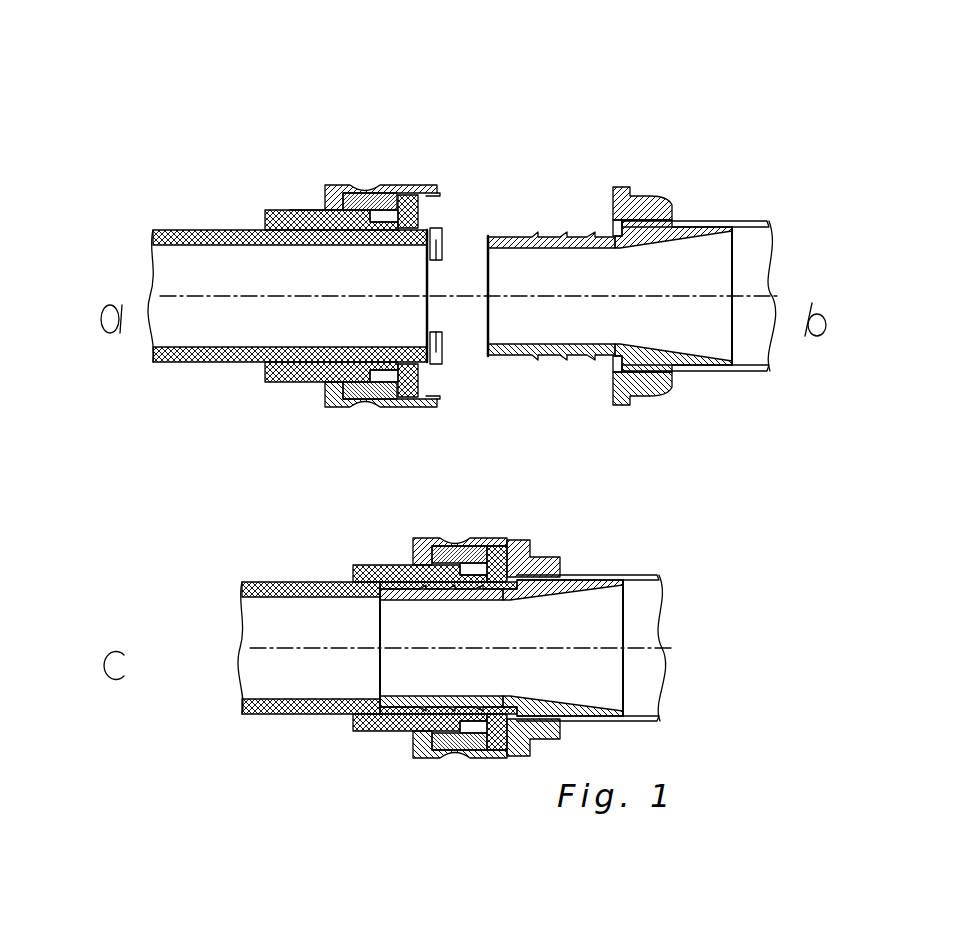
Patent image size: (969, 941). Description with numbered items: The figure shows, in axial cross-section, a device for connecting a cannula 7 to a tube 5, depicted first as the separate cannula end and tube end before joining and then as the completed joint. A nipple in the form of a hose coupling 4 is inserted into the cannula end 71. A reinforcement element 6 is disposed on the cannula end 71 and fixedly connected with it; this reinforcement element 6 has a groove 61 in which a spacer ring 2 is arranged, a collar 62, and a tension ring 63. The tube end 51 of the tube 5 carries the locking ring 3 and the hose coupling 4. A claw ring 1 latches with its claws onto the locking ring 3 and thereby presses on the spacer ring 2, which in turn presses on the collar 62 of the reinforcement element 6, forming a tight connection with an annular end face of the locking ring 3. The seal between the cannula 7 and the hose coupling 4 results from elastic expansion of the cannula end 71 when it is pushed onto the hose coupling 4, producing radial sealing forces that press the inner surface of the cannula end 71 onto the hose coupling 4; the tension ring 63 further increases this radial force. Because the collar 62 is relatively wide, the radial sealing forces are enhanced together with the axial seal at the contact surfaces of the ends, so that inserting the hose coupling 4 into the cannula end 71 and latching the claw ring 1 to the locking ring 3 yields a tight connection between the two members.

The claw ring 1 is at (330, 182).
The spacer ring 2 is at (385, 183).
The locking ring 3 is at (648, 195).
The hose coupling 4 is at (697, 248).
The tube 5 is at (767, 215).
The reinforcement element 6 is at (277, 210).
The cannula 7 is at (183, 230).
The tube end 51 is at (668, 204).
The groove 61 is at (417, 182).
The collar 62 is at (432, 213).
The tension ring 63 is at (307, 210).
The cannula end 71 is at (432, 225).